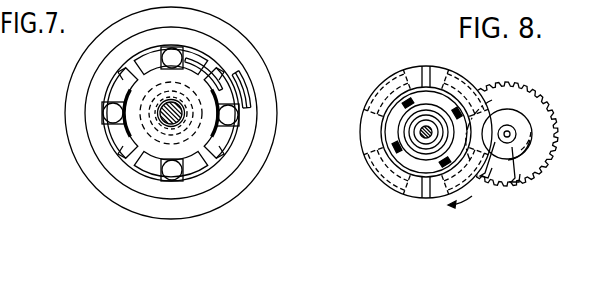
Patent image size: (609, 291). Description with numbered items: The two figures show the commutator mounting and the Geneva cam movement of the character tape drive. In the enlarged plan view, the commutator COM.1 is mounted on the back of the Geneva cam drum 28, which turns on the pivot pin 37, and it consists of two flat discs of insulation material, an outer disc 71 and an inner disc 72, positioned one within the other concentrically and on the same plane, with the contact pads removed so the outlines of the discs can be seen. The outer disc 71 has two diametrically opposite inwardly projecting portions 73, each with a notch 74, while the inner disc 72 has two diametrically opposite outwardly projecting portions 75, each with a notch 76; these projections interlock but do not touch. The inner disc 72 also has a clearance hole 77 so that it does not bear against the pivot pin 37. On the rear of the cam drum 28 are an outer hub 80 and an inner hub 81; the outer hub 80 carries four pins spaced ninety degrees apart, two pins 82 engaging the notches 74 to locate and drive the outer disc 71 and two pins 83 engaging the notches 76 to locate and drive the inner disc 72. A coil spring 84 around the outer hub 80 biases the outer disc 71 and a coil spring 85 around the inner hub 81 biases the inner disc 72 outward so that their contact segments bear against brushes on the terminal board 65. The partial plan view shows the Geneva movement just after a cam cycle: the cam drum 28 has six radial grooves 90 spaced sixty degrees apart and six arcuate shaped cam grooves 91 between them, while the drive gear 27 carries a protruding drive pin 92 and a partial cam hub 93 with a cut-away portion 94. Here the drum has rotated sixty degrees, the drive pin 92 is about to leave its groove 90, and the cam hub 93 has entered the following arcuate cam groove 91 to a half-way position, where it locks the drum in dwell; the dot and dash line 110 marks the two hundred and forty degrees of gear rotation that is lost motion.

In FIG. 7, the Geneva cam drum 28 is at (100, 123).
In FIG. 8, the Geneva cam drum 28 is at (399, 76).
In FIG. 7, the pivot pin 37 is at (175, 125).
In FIG. 8, the terminal board 65 is at (426, 88).
In FIG. 7, the outer disc 71 is at (127, 131).
In FIG. 7, the inner disc 72 is at (117, 146).
In FIG. 7, the inwardly projecting portions 73 is at (223, 148).
In FIG. 7, the notch 74 is at (236, 120).
In FIG. 7, the outwardly projecting portions 75 is at (206, 166).
In FIG. 7, the notch 76 is at (215, 185).
In FIG. 7, the clearance hole 77 is at (164, 122).
In FIG. 7, the outer hub 80 is at (197, 62).
In FIG. 7, the inner hub 81 is at (232, 75).
In FIG. 7, the pins 82 is at (237, 127).
In FIG. 7, the pins 83 is at (190, 80).
In FIG. 7, the coil spring 84 is at (238, 97).
In FIG. 7, the coil spring 85 is at (210, 82).
In FIG. 8, the radial grooves 90 is at (418, 73).
In FIG. 8, the arcuate shaped cam grooves 91 is at (450, 79).
In FIG. 8, the drive pin 92 is at (485, 176).
In FIG. 8, the partial cam hub 93 is at (547, 151).
In FIG. 8, the cut-away portion 94 is at (515, 180).
In FIG. 8, the dot and dash line 110 is at (537, 170).
In FIG. 8, the drive gear 27 is at (526, 93).
In FIG. 7, the commutator COM.1 is at (87, 90).